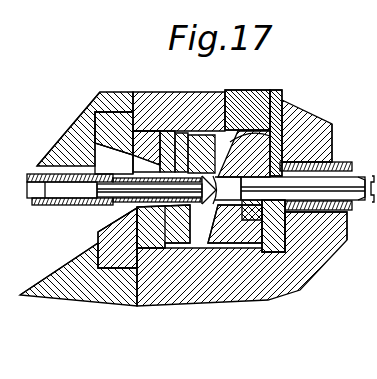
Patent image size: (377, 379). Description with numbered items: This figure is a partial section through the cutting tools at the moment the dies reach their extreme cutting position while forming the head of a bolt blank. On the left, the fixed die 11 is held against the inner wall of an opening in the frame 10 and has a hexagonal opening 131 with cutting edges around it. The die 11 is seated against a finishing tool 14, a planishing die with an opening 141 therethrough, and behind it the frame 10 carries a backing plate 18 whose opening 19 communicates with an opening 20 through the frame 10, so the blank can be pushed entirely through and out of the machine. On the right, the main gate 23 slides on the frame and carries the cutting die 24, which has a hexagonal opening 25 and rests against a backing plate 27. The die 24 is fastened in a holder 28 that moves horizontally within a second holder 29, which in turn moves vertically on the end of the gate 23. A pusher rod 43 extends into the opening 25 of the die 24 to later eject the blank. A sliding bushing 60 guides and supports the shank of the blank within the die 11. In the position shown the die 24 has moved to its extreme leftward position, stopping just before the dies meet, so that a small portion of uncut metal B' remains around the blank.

The frame 10 is at (88, 294).
The fixed die 11 is at (190, 150).
The finishing tool 14 is at (155, 130).
The backing plate 18 is at (101, 150).
The opening 19 is at (100, 157).
The opening 20 is at (96, 238).
The main gate 23 is at (352, 226).
The cutting die 24 is at (240, 130).
The hexagonal opening 25 is at (298, 128).
The backing plate 27 is at (284, 112).
The holder 28 is at (257, 269).
The second holder 29 is at (307, 247).
The pusher rod 43 is at (333, 168).
The sliding bushing 60 is at (34, 206).
The hexagonal opening 131 is at (183, 132).
The opening 141 is at (135, 209).
The uncut metal B' is at (235, 245).